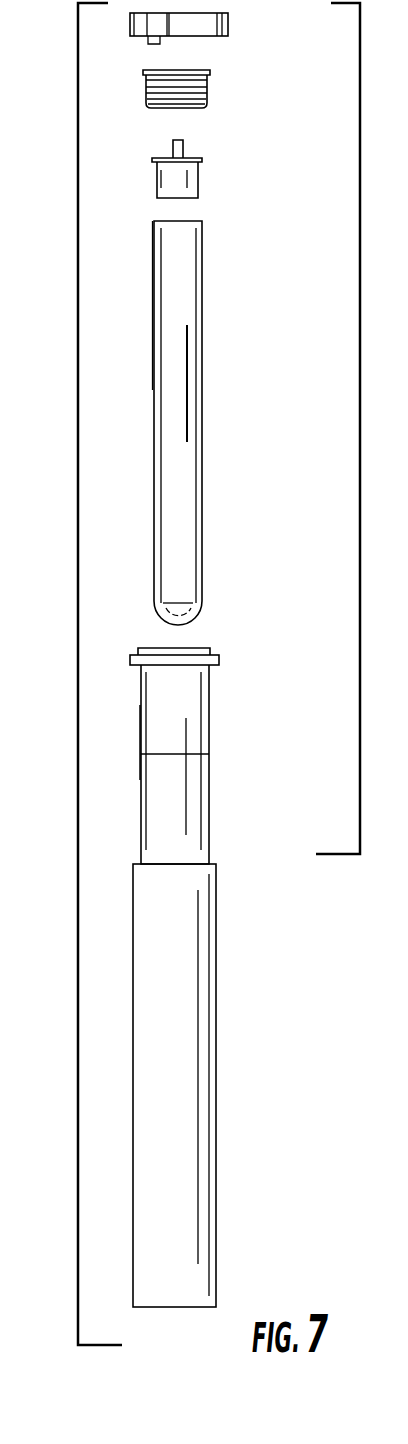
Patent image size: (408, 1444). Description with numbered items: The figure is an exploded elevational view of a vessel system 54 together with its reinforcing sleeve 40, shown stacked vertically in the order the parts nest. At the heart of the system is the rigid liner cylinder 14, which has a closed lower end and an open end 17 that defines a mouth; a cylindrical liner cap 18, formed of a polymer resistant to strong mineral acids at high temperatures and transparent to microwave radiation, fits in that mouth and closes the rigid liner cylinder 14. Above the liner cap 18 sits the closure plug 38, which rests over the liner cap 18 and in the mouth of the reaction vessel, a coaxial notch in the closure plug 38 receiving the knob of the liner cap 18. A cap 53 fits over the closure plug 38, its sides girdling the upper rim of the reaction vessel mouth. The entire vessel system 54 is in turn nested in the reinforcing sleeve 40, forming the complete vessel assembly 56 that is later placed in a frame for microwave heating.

The rigid liner cylinder 14 is at (191, 312).
The open end 17 is at (160, 212).
The cylindrical liner cap 18 is at (198, 175).
The closure plug 38 is at (207, 90).
The reinforcing sleeve 40 is at (187, 1072).
The cap 53 is at (228, 24).
The vessel system 54 is at (352, 467).
The vessel assemblies 56 is at (70, 339).